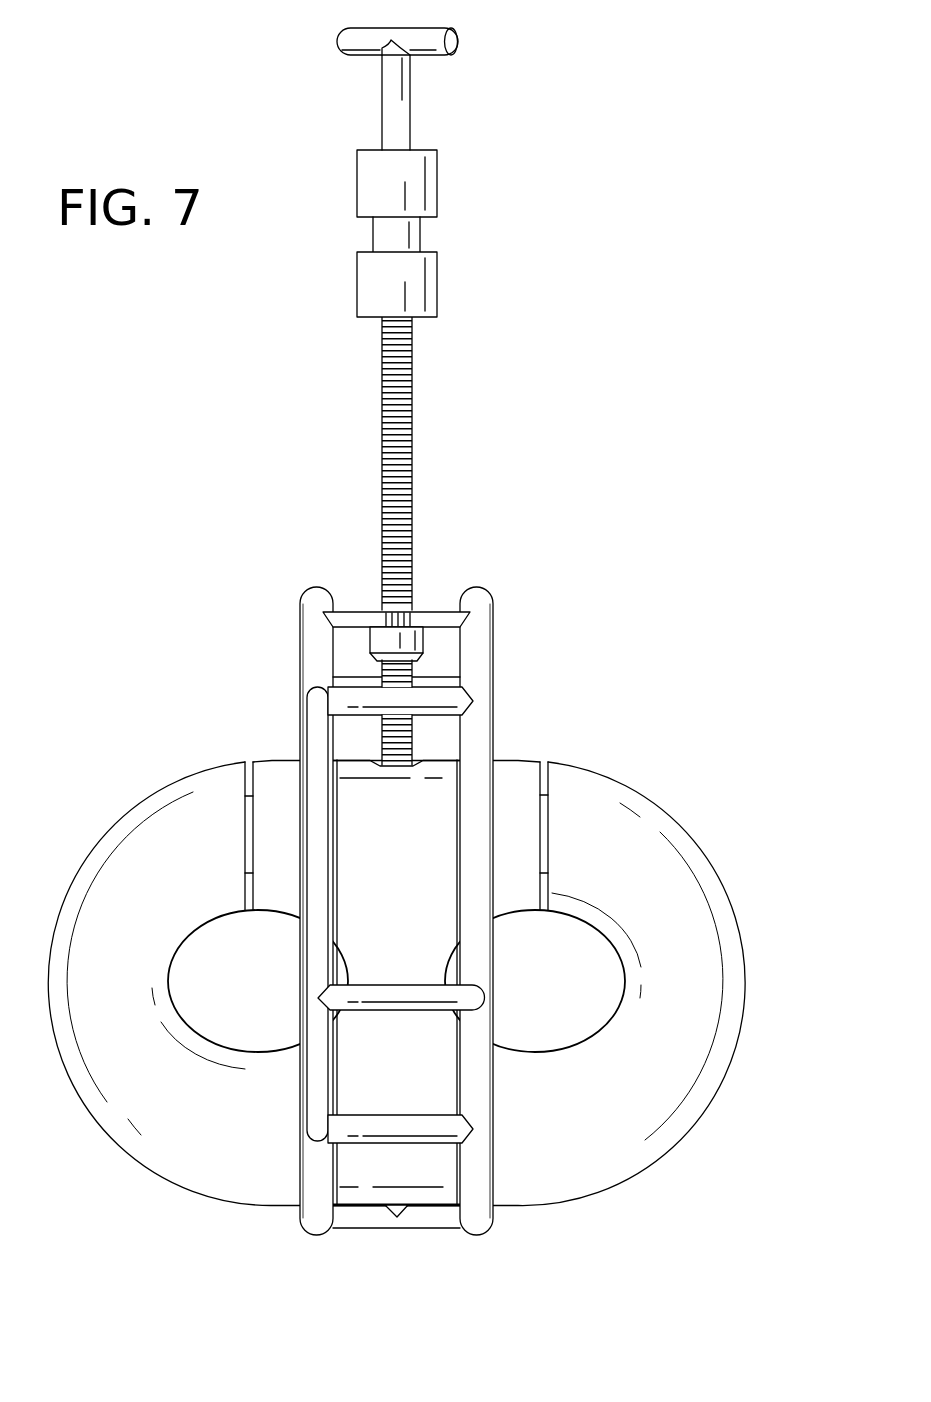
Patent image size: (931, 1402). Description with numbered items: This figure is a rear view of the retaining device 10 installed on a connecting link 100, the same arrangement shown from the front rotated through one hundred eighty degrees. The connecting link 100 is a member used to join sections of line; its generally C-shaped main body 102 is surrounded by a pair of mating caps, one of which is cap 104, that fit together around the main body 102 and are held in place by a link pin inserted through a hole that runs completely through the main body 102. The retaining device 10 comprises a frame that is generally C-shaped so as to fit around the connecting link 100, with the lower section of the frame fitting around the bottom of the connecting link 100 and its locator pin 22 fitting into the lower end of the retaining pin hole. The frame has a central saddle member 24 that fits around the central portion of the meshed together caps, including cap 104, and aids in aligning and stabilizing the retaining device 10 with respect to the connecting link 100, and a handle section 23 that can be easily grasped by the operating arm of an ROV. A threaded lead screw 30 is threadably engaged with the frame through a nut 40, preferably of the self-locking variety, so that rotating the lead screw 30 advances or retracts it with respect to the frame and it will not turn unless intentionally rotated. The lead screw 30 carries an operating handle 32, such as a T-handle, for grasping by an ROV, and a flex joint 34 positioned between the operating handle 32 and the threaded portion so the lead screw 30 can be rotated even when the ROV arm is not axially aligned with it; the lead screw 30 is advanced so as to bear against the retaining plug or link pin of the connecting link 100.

The retaining device 10 is at (422, 663).
The locator pin 22 is at (398, 1212).
The handle section 23 is at (315, 807).
The saddle member 24 is at (318, 998).
The lead screw 30 is at (400, 462).
The operating handle 32 is at (457, 38).
The flex joint 34 is at (416, 233).
The nut 40 is at (382, 637).
The connecting link 100 is at (685, 888).
The main body 102 is at (594, 1113).
The cap 104 is at (420, 856).